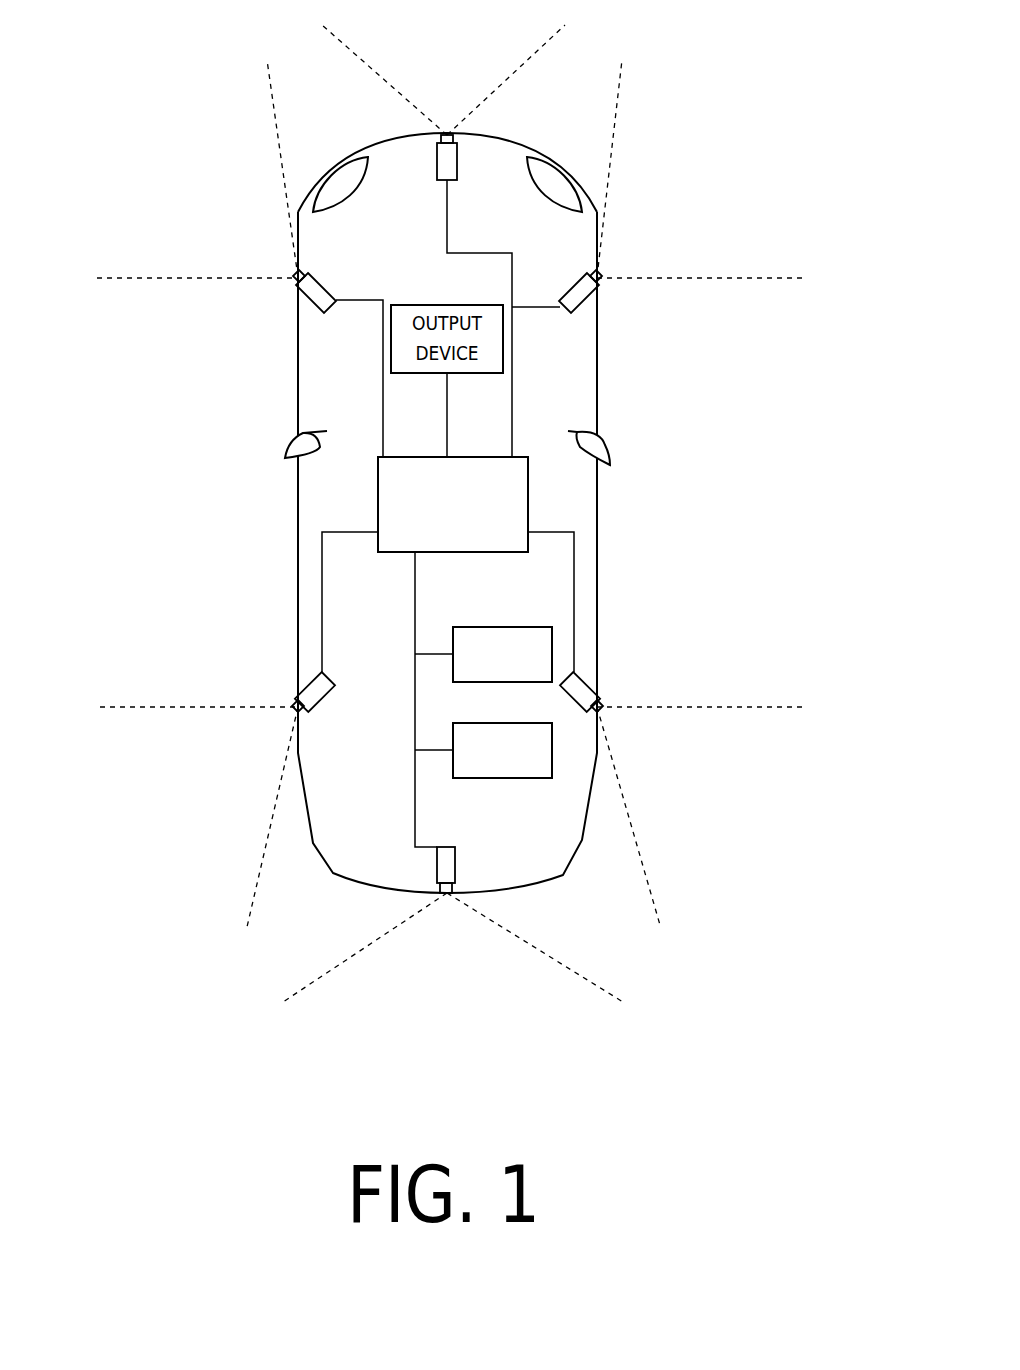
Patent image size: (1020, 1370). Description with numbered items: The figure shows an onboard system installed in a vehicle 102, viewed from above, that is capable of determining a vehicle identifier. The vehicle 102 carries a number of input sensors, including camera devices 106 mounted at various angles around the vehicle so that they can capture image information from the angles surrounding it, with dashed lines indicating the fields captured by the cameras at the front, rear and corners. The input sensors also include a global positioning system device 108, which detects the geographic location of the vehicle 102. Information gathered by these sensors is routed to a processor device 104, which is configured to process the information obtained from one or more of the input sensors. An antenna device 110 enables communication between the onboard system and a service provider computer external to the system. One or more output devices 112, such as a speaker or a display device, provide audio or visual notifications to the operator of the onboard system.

The vehicle 102 is at (578, 177).
The processor device 104 is at (518, 456).
The camera device 106 is at (447, 133).
The global positioning system device 108 is at (520, 627).
The antenna device 110 is at (518, 724).
The output device 112 is at (595, 270).